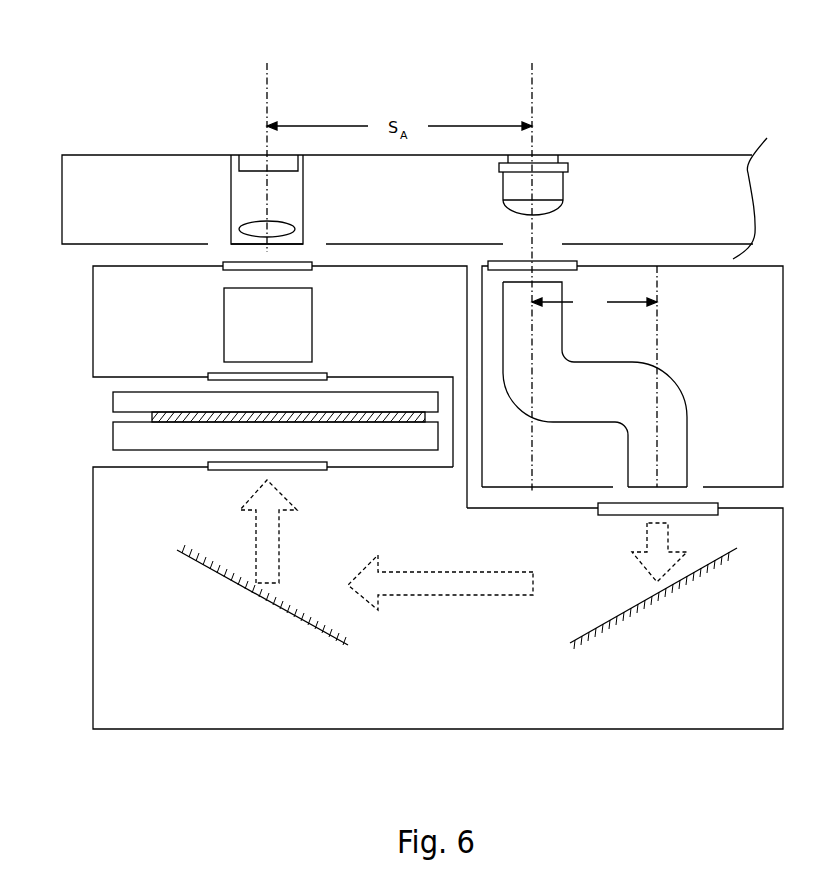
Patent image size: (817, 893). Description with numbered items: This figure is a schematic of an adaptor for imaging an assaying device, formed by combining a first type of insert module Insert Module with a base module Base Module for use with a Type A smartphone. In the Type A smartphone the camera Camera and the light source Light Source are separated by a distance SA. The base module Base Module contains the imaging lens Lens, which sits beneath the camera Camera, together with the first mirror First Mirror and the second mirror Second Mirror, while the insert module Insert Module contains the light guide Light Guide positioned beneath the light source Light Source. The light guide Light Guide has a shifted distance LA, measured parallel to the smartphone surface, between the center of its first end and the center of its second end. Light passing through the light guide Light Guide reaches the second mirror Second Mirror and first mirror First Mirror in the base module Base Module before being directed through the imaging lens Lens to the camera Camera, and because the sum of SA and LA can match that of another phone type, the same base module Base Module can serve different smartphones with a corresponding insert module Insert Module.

The camera Camera is at (232, 185).
The light source Light Source is at (563, 183).
The insert module Insert Module is at (688, 268).
The light guide Light Guide is at (660, 376).
The imaging lens Lens is at (280, 385).
The base module Base Module is at (600, 729).
The first mirror First Mirror is at (273, 608).
The second mirror Second Mirror is at (648, 603).